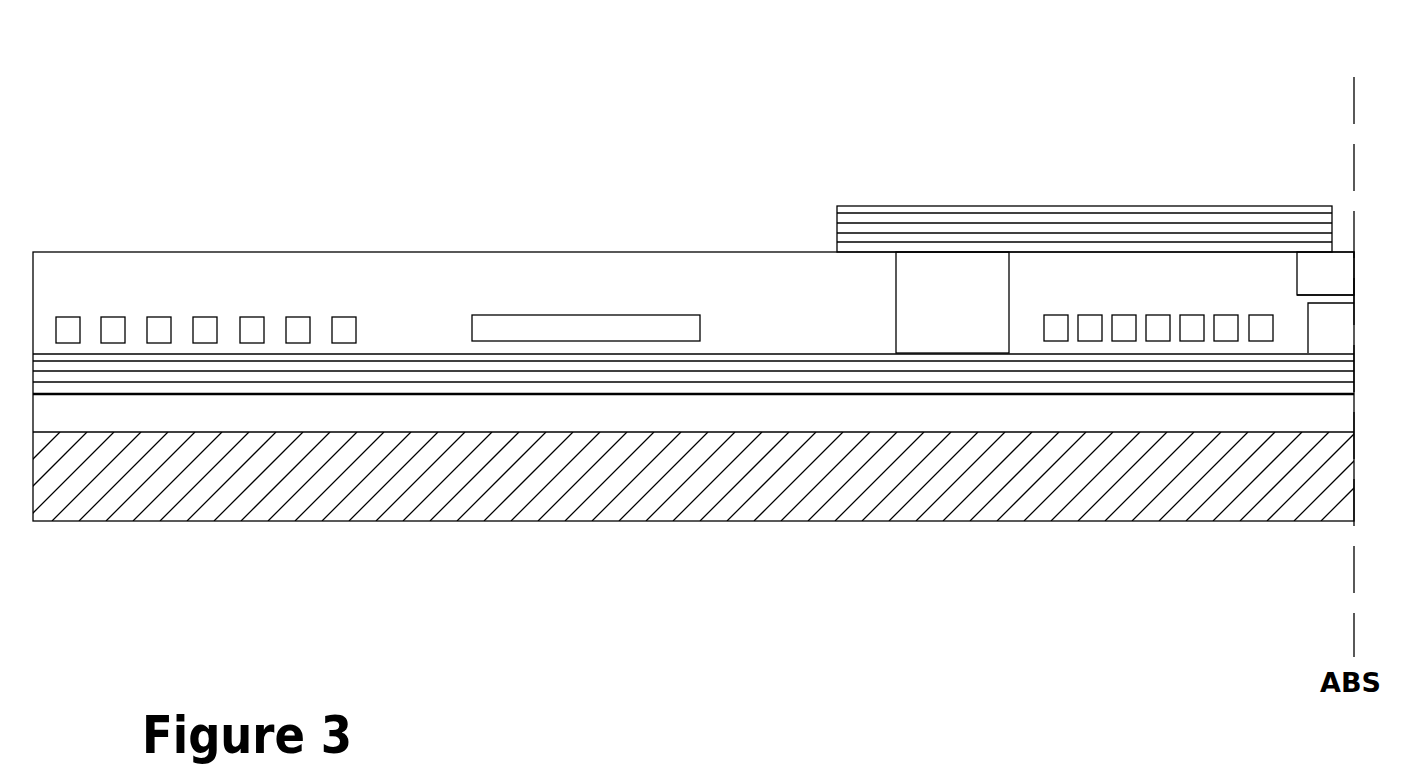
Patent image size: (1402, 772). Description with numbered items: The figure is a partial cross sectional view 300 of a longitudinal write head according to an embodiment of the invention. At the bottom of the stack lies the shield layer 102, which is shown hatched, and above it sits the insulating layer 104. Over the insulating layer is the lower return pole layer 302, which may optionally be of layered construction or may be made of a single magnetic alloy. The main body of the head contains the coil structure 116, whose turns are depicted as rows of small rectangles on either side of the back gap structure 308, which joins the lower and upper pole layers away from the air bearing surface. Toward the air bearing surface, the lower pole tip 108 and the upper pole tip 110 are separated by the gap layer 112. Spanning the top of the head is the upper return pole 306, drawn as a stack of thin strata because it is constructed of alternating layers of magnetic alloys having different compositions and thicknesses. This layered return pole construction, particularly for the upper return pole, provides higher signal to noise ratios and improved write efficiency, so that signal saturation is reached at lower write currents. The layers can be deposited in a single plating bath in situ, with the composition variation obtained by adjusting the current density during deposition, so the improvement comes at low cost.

The partial cross sectional view 300 is at (493, 145).
The shield layer 102 is at (723, 486).
The insulating layer 104 is at (804, 426).
The lower return pole layer 302 is at (647, 388).
The upper return pole 306 is at (1097, 228).
The back gap structure 308 is at (980, 325).
The upper pole tip 110 is at (1325, 273).
The gap layer 112 is at (1350, 298).
The lower pole tip 108 is at (1320, 332).
The coil structure 116 is at (265, 328).